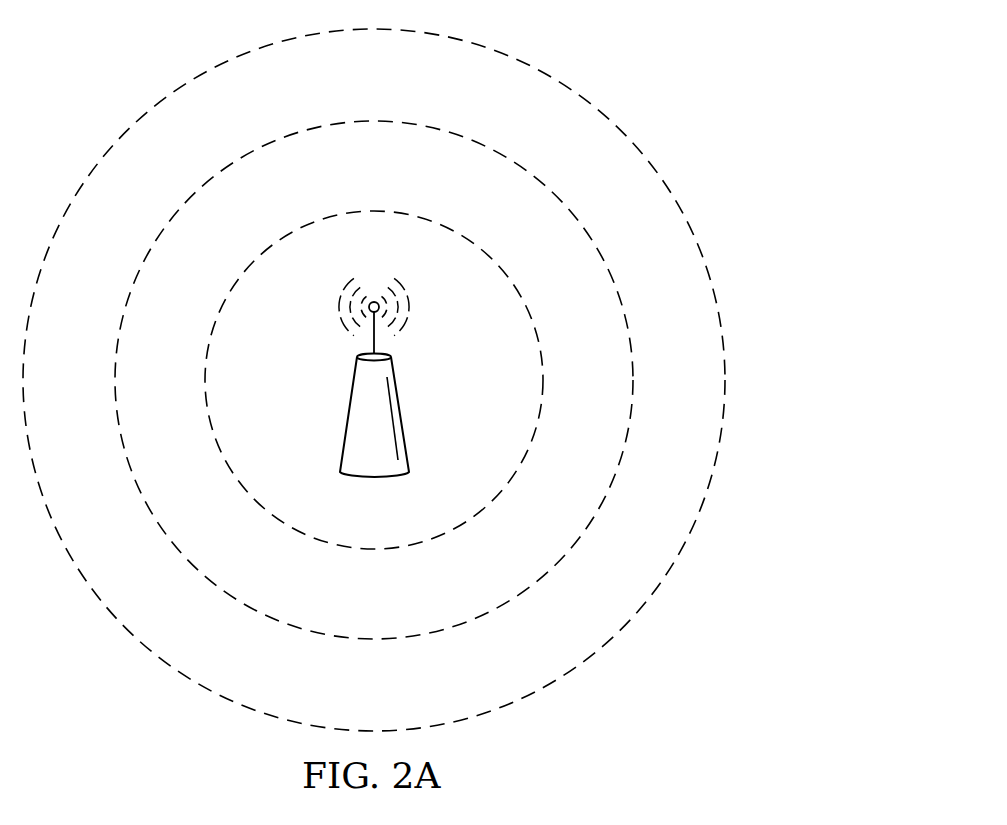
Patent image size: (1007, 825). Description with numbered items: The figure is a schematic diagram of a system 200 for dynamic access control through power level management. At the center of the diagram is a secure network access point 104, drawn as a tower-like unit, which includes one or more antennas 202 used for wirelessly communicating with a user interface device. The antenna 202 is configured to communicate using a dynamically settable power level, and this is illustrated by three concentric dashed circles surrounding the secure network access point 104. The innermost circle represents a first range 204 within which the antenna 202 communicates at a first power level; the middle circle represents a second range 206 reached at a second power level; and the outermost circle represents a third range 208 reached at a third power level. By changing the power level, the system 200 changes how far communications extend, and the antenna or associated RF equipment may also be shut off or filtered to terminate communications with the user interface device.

The system 200 is at (618, 62).
The antenna 202 is at (374, 301).
The first range 204 is at (307, 214).
The second range 206 is at (216, 162).
The third range 208 is at (127, 117).
The secure network access point 104 is at (348, 412).